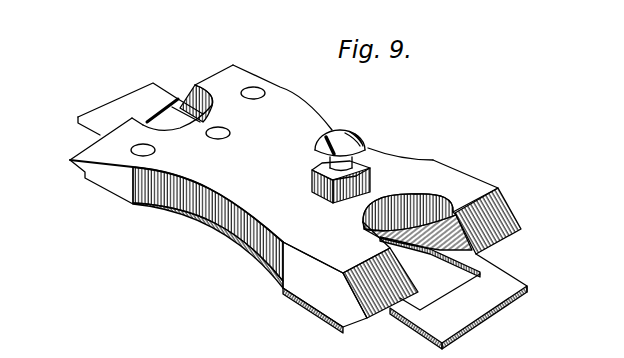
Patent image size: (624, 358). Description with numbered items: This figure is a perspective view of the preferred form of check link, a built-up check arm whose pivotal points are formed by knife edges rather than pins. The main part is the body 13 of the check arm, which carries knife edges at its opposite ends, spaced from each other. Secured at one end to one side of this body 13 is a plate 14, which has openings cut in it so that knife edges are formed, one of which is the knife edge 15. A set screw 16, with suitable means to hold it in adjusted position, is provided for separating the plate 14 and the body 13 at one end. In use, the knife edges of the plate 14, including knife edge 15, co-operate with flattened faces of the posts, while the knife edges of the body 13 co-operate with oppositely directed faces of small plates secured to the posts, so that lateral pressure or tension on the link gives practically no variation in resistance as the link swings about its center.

The body of the check arm 13 is at (530, 250).
The plate 14 is at (162, 104).
The knife edge 15 is at (432, 307).
The set screw 16 is at (355, 137).